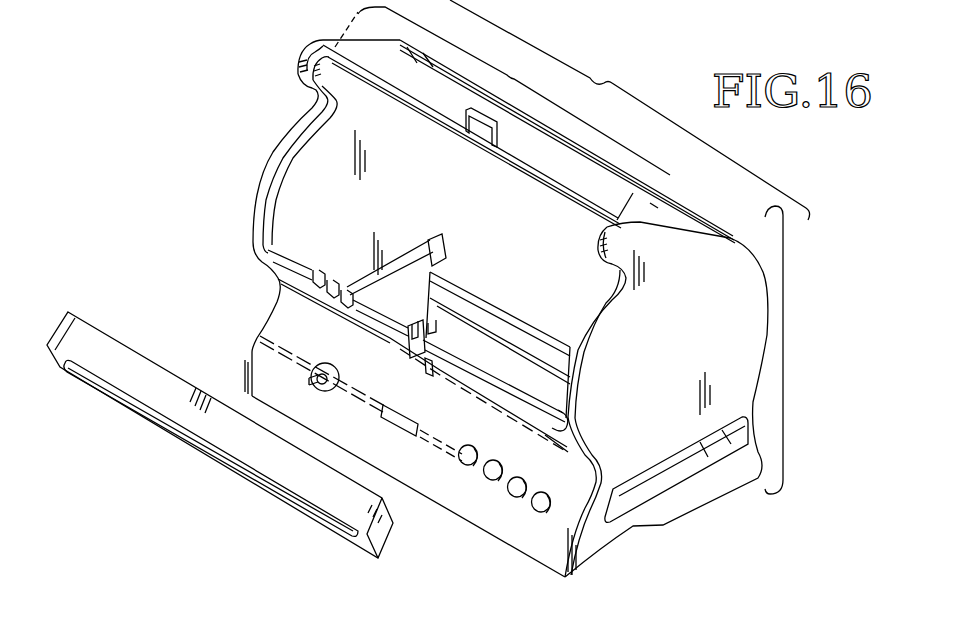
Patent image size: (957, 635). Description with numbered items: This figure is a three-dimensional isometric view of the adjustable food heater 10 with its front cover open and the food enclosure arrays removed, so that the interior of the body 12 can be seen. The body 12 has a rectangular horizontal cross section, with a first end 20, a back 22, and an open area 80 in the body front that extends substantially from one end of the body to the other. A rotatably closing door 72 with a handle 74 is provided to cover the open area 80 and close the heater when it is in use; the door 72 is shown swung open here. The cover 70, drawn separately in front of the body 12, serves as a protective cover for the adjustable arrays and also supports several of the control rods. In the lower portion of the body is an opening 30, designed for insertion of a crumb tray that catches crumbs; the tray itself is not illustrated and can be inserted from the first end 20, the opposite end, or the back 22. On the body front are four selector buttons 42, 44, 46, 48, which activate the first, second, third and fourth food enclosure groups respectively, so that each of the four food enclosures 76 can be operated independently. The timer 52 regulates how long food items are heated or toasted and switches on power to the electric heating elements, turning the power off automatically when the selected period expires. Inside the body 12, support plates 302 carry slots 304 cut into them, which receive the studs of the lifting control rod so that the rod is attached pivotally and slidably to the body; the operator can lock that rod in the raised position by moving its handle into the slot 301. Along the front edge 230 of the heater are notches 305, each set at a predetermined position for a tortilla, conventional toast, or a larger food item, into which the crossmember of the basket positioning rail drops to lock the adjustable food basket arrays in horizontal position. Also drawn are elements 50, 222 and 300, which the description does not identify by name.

The adjustable food heater 10 is at (600, 80).
The body 12 is at (783, 350).
The first end 20 is at (705, 491).
The back 22 is at (260, 182).
The opening 30 is at (638, 495).
The selector button 42 is at (462, 468).
The selector button 44 is at (488, 484).
The selector button 46 is at (512, 500).
The selector button 48 is at (540, 512).
The slot 50 is at (422, 434).
The timer 52 is at (320, 366).
The cover 70 is at (345, 512).
The rotatably closing door 72 is at (317, 67).
The handle 74 is at (497, 120).
The food enclosures 76 is at (316, 145).
The open area 80 is at (507, 75).
The end panel 222 is at (578, 326).
The front edge 230 is at (570, 426).
The groove 300 is at (388, 378).
The slot 301 is at (427, 373).
The support plates 302 is at (430, 320).
The slots 304 is at (416, 316).
The notches 305 is at (347, 327).